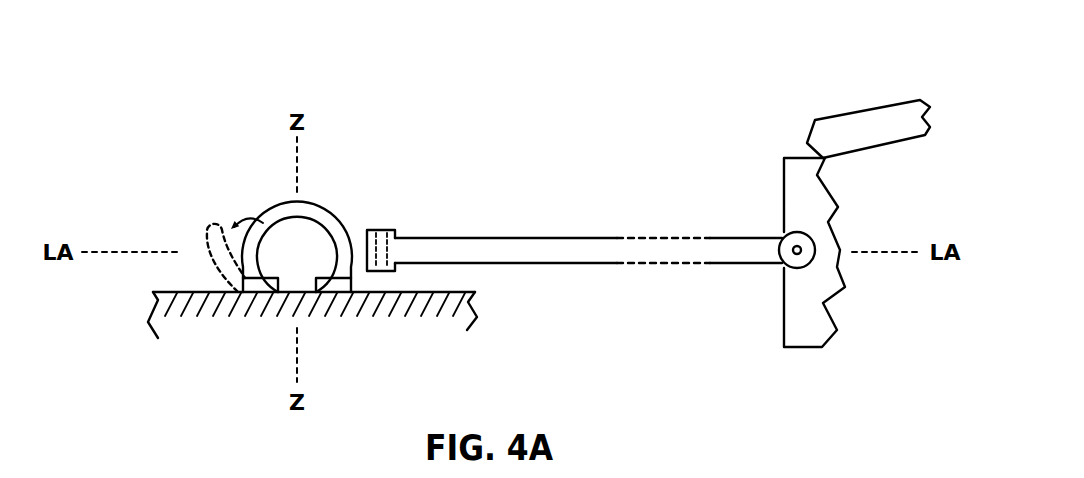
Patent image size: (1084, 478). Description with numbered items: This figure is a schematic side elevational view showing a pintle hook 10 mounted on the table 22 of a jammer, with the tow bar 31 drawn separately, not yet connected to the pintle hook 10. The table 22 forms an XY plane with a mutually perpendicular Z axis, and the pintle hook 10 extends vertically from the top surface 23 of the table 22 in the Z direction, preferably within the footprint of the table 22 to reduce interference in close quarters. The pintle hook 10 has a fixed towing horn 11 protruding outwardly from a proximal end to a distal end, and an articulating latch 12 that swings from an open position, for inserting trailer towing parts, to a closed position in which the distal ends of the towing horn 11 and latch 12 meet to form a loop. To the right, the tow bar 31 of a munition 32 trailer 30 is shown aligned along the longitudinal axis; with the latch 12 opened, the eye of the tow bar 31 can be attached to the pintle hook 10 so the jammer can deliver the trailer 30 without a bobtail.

The pintle hook 10 is at (300, 200).
The towing horn 11 is at (277, 217).
The articulating latch 12 is at (258, 240).
The table 22 is at (305, 284).
The top surface 23 is at (200, 292).
The trailer 30 is at (795, 187).
The tow bar 31 is at (498, 250).
The munition 32 is at (867, 127).